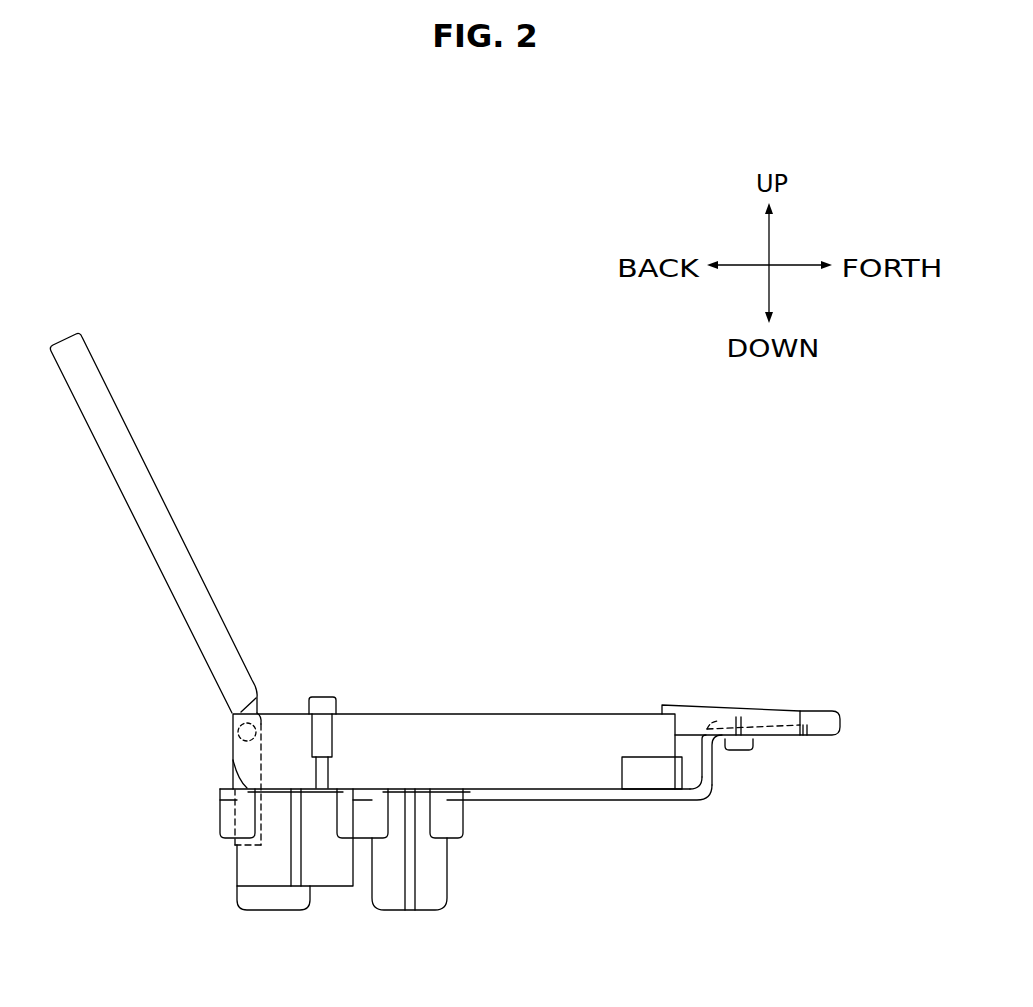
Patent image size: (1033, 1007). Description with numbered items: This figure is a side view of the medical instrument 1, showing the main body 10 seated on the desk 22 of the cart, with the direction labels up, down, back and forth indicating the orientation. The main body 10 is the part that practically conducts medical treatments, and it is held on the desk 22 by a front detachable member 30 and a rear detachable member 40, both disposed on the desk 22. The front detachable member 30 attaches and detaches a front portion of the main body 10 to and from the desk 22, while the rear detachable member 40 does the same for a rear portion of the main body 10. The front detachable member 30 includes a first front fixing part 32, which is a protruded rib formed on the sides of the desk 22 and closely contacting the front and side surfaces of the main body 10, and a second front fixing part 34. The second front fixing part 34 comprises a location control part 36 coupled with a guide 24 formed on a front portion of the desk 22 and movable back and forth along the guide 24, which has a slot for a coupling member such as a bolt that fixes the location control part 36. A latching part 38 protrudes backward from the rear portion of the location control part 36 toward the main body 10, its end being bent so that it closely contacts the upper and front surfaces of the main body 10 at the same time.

The medical instrument 1 is at (494, 474).
The main body 10 is at (417, 713).
The desk 22 is at (512, 798).
The guide 24 is at (703, 757).
The front detachable member 30 is at (632, 895).
The first front fixing part 32 is at (650, 778).
The second front fixing part 34 is at (765, 762).
The location control part 36 is at (823, 710).
The latching part 38 is at (662, 704).
The rear detachable member 40 is at (320, 701).